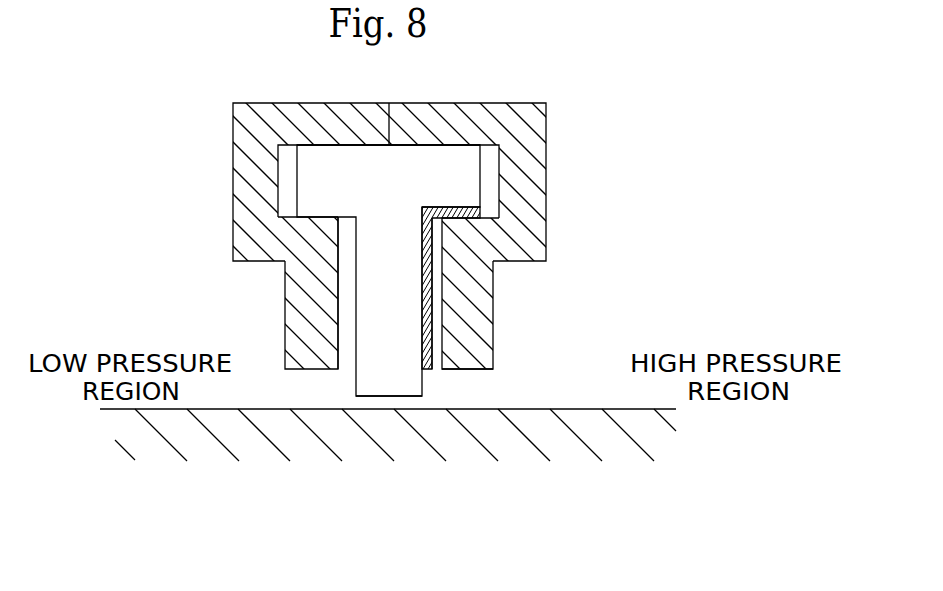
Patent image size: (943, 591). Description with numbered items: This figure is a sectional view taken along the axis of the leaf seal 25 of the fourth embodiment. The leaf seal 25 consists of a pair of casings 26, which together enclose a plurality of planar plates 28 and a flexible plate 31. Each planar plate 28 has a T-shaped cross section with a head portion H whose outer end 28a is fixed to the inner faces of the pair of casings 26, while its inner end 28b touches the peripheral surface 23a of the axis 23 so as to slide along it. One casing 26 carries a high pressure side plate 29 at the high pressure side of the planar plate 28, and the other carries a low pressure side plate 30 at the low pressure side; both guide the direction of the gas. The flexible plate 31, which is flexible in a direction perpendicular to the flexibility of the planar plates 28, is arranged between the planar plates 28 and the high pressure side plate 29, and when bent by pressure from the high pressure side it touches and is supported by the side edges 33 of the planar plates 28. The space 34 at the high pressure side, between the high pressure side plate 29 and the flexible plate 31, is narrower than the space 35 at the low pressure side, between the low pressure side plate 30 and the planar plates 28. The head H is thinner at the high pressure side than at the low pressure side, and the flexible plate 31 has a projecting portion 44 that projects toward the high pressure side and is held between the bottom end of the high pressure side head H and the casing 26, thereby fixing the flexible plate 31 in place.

The axis 23 is at (612, 454).
The peripheral surface 23a is at (600, 409).
The leaf seal 25 is at (556, 103).
The casing 26 is at (317, 113).
The planar plate 28 is at (357, 283).
The outer end 28a is at (317, 160).
The inner end 28b is at (372, 385).
The high pressure side plate 29 is at (475, 328).
The low pressure side plate 30 is at (297, 333).
The flexible plate 31 is at (429, 307).
The side edge 33 is at (428, 275).
The space 34 is at (437, 372).
The space 35 is at (342, 367).
The projecting portion 44 is at (480, 208).
The head portion H is at (463, 169).